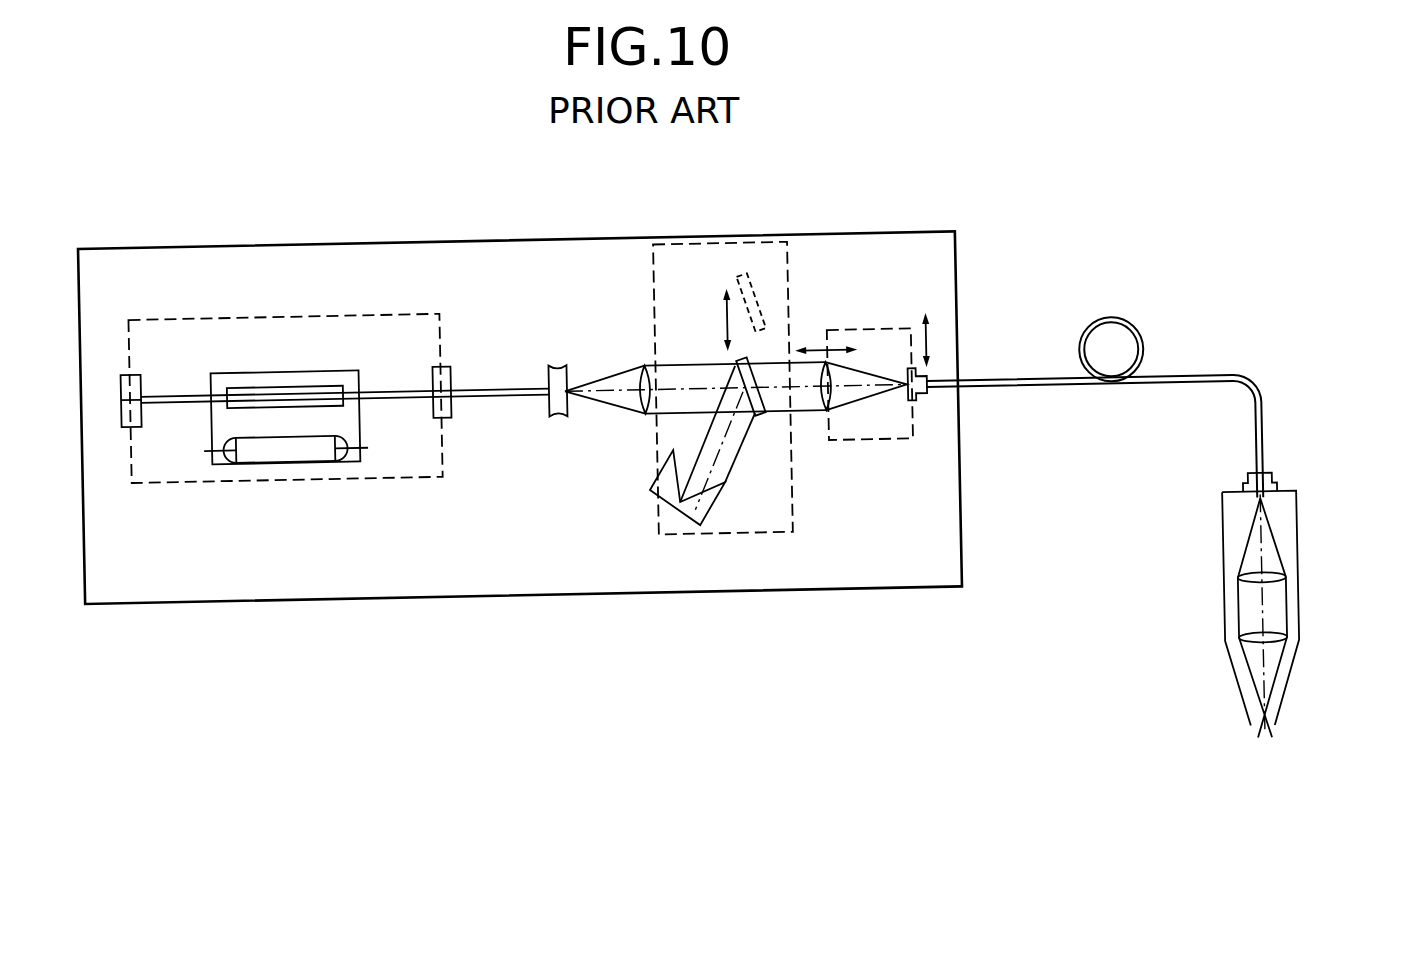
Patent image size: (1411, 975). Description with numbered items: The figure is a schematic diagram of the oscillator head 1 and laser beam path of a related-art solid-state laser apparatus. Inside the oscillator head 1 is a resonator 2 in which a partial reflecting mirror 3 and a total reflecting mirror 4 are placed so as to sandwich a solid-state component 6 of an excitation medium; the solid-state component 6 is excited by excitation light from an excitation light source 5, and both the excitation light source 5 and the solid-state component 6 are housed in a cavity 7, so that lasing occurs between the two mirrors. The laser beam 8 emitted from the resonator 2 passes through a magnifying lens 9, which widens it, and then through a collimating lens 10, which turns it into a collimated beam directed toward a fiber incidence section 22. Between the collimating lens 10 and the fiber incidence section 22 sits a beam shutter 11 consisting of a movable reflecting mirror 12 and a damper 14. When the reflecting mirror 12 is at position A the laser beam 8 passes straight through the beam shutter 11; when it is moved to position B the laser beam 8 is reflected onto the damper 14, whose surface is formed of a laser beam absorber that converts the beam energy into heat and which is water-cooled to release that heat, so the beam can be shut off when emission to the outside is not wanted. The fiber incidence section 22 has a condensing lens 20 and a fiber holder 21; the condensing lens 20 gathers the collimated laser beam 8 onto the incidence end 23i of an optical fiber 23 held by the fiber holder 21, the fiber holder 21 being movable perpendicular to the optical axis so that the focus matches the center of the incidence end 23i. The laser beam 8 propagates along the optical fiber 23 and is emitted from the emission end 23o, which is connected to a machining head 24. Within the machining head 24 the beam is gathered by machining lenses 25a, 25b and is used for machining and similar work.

The oscillator head 1 is at (548, 249).
The resonator 2 is at (174, 321).
The partial reflecting mirror 3 is at (445, 374).
The total reflecting mirror 4 is at (124, 428).
The excitation light source 5 is at (283, 466).
The solid-state component 6 is at (325, 391).
The cavity 7 is at (255, 376).
The laser beam 8 is at (496, 398).
The magnifying lens 9 is at (550, 375).
The collimating lens 10 is at (638, 377).
The beam shutter 11 is at (716, 256).
The reflecting mirror 12 is at (761, 427).
The damper 14 is at (655, 515).
The condensing lens 20 is at (826, 428).
The fiber holder 21 is at (917, 412).
The fiber incidence section 22 is at (871, 345).
The optical fiber 23 is at (1012, 398).
The optical fiber incidence end 23i is at (905, 404).
The emission end 23o is at (1272, 509).
The machining head 24 is at (1291, 605).
The machining lens 25a is at (1231, 601).
The machining lens 25b is at (1230, 660).
The position A is at (754, 312).
The position B is at (758, 467).